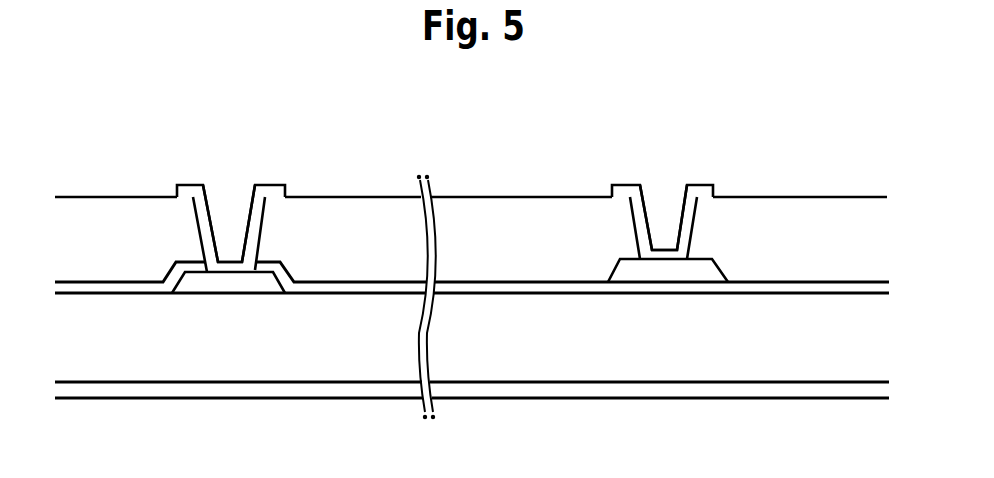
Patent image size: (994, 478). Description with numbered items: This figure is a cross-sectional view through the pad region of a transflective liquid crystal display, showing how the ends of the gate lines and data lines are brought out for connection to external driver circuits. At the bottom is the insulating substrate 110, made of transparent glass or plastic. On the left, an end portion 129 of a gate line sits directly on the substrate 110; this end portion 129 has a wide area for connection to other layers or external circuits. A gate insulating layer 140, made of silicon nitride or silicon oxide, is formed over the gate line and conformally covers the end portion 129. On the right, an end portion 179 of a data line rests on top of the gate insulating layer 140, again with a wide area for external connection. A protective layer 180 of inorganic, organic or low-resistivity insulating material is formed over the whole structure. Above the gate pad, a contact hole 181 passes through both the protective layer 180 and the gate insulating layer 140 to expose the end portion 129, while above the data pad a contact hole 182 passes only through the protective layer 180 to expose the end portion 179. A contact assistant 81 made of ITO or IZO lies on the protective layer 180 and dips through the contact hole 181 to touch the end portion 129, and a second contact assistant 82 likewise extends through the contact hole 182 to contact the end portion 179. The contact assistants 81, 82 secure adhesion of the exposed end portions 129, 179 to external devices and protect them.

The insulating substrate 110 is at (165, 388).
The end portions of the gate lines 129 is at (228, 285).
The gate insulating layer 140 is at (310, 283).
The end portions of the data lines 179 is at (647, 268).
The protective layer 180 is at (520, 255).
The contact holes 181 is at (200, 231).
The contact holes 182 is at (636, 231).
The contact assistant 81 is at (267, 190).
The contact assistant 82 is at (699, 190).